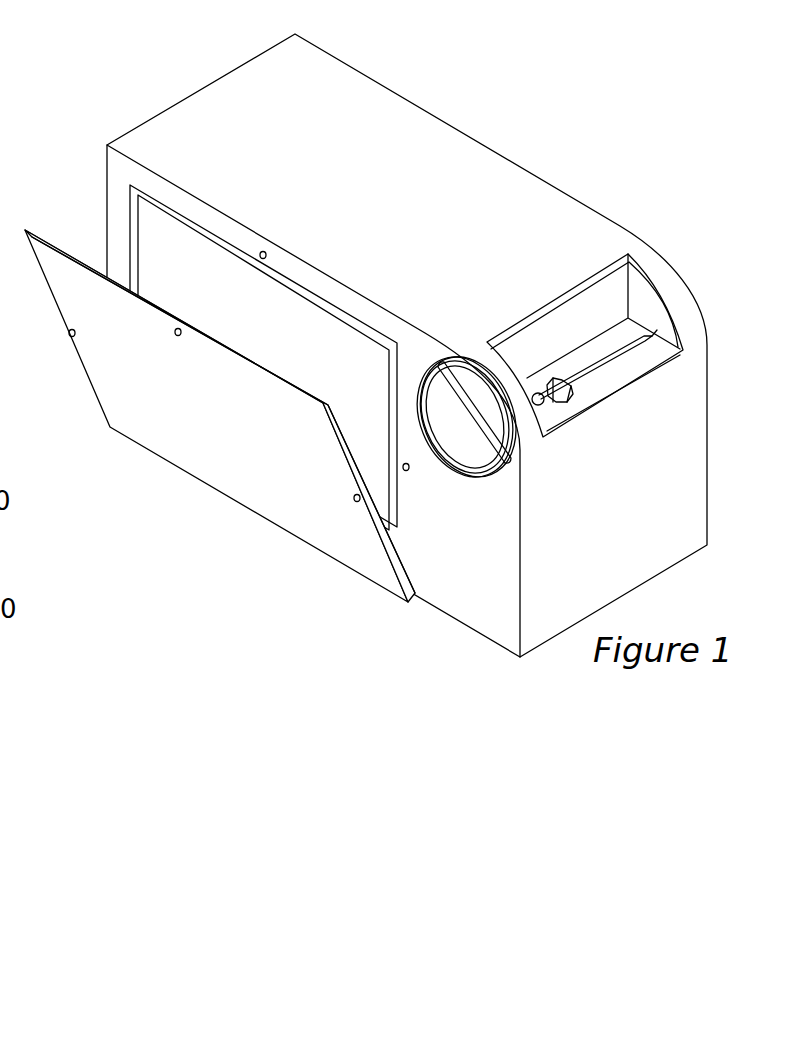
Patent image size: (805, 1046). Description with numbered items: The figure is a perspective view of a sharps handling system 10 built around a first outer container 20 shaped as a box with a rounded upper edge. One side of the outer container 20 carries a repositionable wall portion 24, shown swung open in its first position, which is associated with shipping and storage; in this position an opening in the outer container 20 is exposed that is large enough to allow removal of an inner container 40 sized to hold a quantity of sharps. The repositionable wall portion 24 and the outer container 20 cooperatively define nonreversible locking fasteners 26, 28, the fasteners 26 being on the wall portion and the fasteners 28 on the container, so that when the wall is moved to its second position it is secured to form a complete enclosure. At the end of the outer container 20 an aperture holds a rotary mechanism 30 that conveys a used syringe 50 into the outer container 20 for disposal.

The system 10 is at (697, 142).
The first outer container 20 is at (447, 142).
The repositionable wall portion 24 is at (192, 448).
The nonreversible locking fastener 26 is at (70, 335).
The nonreversible locking fastener 28 is at (265, 252).
The rotary mechanism 30 is at (645, 300).
The inner container 40 is at (157, 230).
The used syringe 50 is at (603, 362).